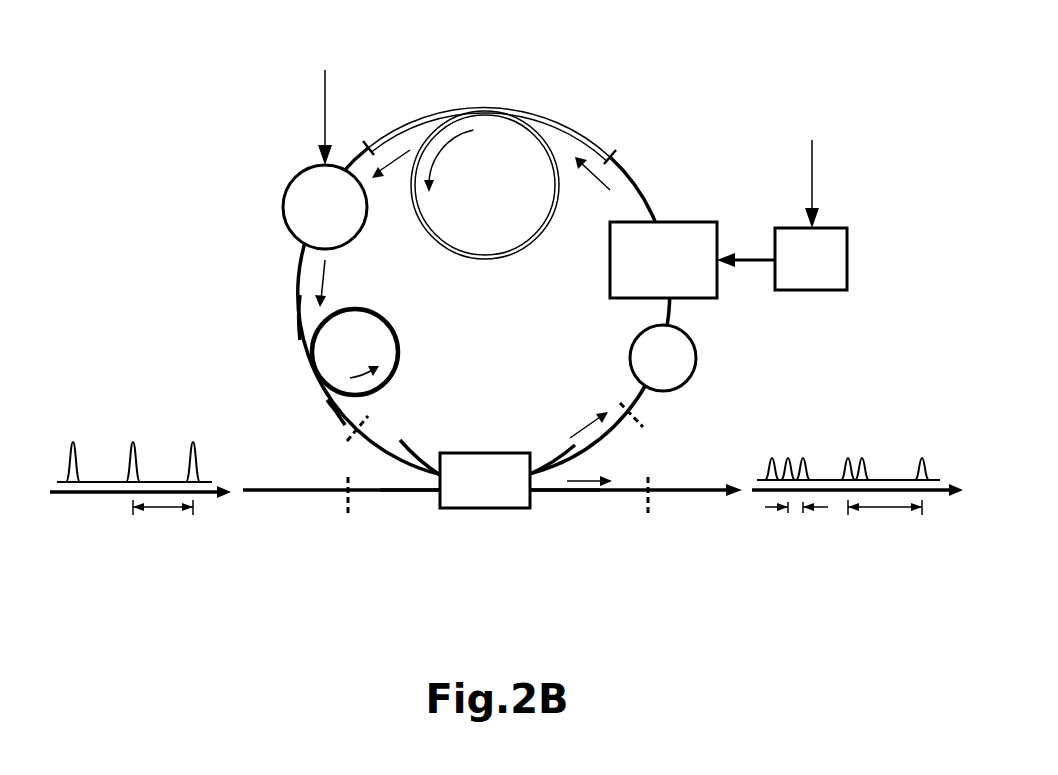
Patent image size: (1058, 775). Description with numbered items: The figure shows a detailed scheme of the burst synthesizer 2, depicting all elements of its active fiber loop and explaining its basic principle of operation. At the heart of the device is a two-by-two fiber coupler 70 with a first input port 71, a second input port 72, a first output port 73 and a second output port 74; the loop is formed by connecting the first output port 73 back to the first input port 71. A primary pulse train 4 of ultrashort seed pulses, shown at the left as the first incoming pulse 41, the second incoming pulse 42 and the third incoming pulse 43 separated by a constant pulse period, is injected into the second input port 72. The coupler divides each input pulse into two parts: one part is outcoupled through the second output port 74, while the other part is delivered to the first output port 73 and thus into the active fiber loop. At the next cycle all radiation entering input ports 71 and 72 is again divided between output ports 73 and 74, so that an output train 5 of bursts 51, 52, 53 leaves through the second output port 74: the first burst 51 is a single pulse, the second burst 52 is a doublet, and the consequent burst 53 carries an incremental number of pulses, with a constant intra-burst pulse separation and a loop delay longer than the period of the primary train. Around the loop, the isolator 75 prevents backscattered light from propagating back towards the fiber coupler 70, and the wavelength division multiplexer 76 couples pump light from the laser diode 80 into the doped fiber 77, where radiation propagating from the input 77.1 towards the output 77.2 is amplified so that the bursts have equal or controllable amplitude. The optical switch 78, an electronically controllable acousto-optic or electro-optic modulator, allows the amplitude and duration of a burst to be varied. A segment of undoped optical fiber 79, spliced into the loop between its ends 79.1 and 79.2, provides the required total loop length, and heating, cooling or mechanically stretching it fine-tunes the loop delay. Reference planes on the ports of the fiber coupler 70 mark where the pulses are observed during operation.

The burst synthesizer 2 is at (108, 97).
The primary pulse train 4 is at (45, 399).
The output train of bursts 5 is at (763, 416).
The first incoming pulse 41 is at (193, 449).
The second incoming pulse 42 is at (133, 449).
The third incoming pulse 43 is at (73, 449).
The first burst 51 is at (922, 455).
The second burst 52 is at (855, 455).
The third burst 53 is at (787, 455).
The fiber coupler 70 is at (469, 497).
The first input port 71 is at (420, 434).
The second input port 72 is at (410, 531).
The first output port 73 is at (553, 433).
The second output port 74 is at (565, 531).
The isolator 75 is at (649, 374).
The wavelength division multiplexer 76 is at (647, 277).
The doped fiber 77 is at (530, 112).
The input of doped fiber 77.1 is at (631, 122).
The output of doped fiber 77.2 is at (391, 114).
The optical switch 78 is at (309, 224).
The undoped optical fiber 79 is at (397, 340).
The first end of undoped fiber 79.1 is at (258, 328).
The second end of undoped fiber 79.2 is at (295, 420).
The laser diode 80 is at (795, 276).